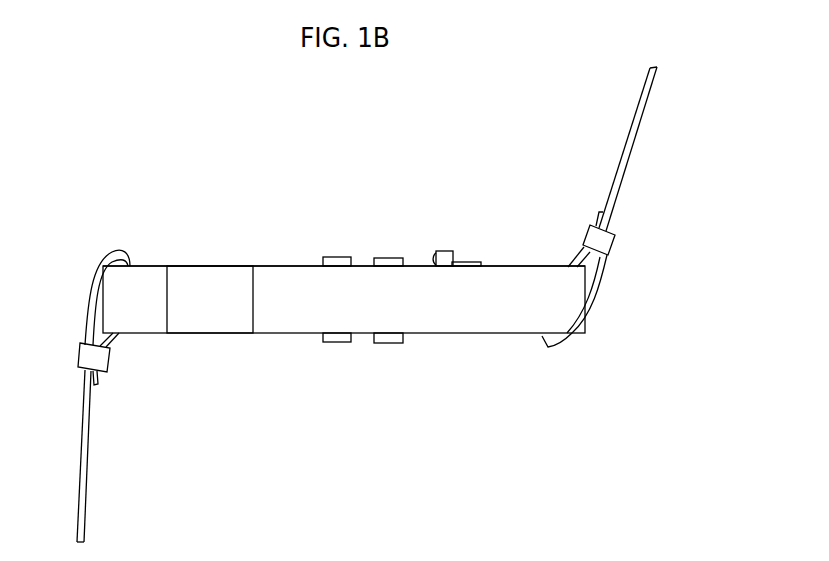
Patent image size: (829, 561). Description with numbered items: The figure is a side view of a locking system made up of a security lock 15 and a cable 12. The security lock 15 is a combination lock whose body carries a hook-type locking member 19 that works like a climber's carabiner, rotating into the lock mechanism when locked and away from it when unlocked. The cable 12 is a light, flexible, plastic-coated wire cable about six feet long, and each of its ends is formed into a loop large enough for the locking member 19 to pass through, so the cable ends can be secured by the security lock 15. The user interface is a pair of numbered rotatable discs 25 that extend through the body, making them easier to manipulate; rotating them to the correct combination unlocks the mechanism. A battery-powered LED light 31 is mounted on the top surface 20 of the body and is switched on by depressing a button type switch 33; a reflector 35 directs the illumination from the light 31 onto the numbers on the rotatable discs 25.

The cable 12 is at (407, 304).
The security lock 15 is at (344, 324).
The locking member 19 is at (226, 325).
The top surface 20 is at (344, 215).
The rotatable discs 25 is at (342, 308).
The light 31 is at (407, 233).
The button type switch 33 is at (509, 233).
The reflector 35 is at (471, 209).